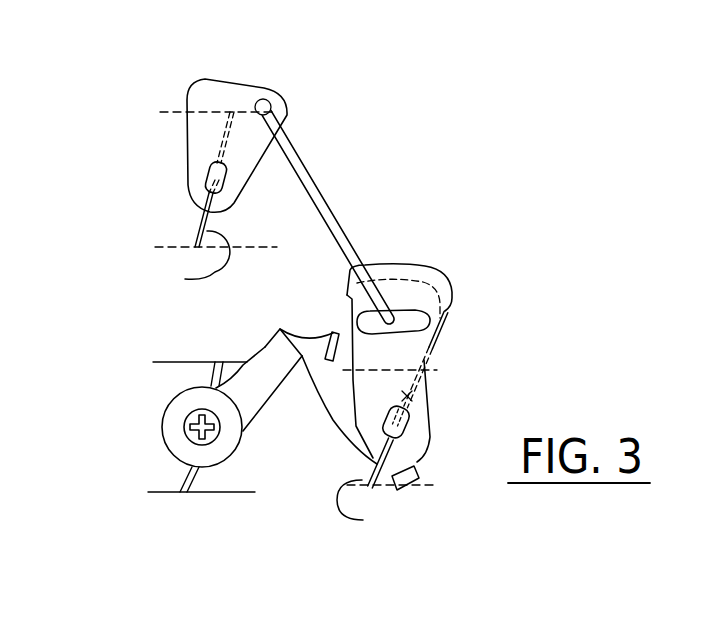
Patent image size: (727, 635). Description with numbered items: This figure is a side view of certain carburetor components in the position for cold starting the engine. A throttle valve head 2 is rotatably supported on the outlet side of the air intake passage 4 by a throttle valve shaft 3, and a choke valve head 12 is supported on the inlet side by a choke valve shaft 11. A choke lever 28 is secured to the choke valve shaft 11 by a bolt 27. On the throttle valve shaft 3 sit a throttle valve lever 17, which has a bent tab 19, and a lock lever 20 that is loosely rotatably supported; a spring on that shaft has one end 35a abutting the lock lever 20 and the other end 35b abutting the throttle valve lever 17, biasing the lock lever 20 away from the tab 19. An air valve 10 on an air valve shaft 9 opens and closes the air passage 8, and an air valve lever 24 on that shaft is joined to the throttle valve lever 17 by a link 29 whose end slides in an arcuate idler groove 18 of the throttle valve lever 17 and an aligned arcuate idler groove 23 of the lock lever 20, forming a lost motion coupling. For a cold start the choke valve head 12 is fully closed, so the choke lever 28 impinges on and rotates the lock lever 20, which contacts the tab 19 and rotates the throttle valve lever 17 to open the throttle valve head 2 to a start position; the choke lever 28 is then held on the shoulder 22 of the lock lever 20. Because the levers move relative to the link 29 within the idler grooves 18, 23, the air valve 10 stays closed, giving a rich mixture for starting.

The throttle valve head 2 is at (361, 509).
The throttle valve shaft 3 is at (409, 420).
The air intake passage 4 is at (149, 472).
The air passage 8 is at (167, 226).
The air valve shaft 9 is at (207, 172).
The air valve 10 is at (192, 243).
The choke valve shaft 11 is at (170, 407).
The choke valve head 12 is at (210, 382).
The throttle valve lever 17 is at (431, 275).
The arcuate idler groove 18 is at (432, 322).
The bent tab 19 is at (435, 354).
The lock lever 20 is at (344, 388).
The shoulder 22 is at (263, 346).
The arcuate idler groove 23 is at (398, 310).
The air valve lever 24 is at (217, 87).
The bolt 27 is at (217, 437).
The choke lever 28 is at (268, 381).
The link 29 is at (300, 163).
The spring end 35a is at (333, 333).
The spring end 35b is at (412, 483).